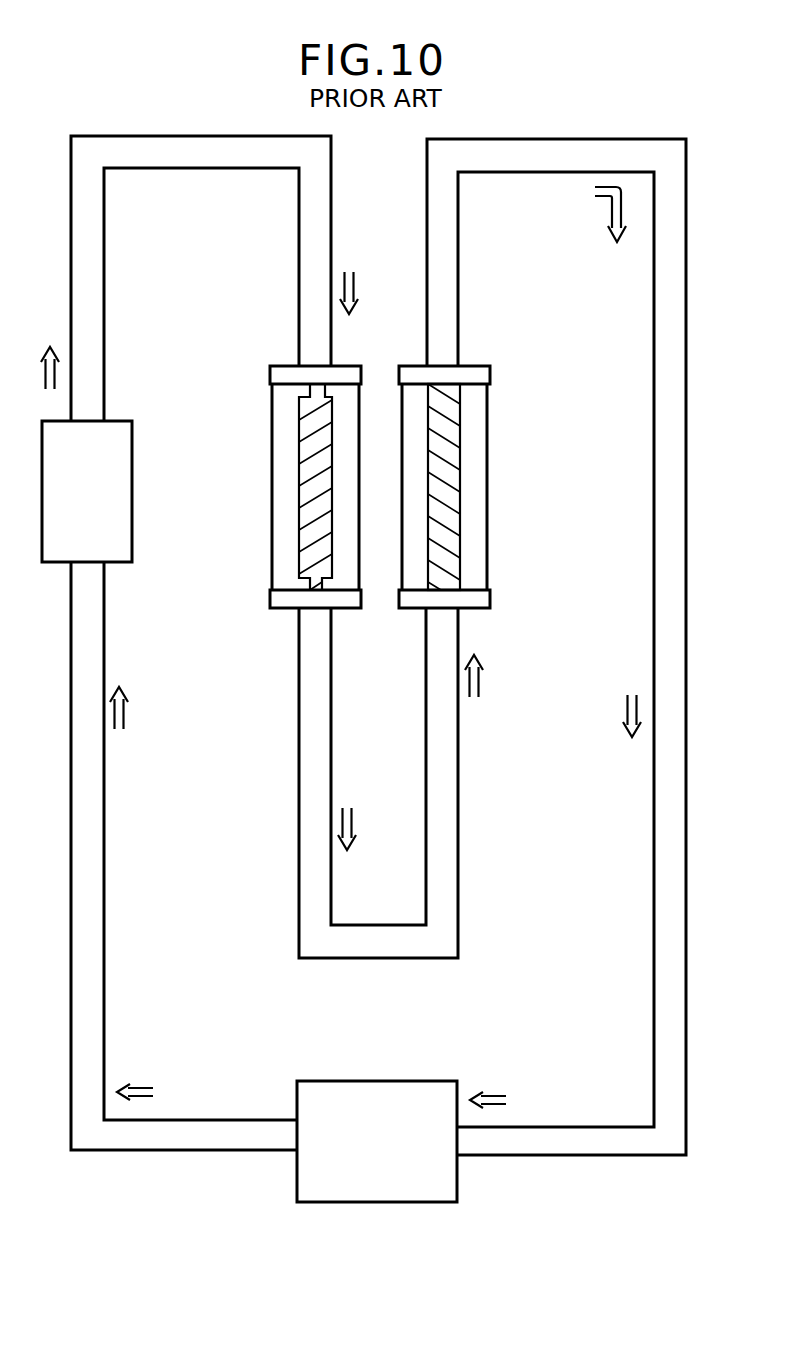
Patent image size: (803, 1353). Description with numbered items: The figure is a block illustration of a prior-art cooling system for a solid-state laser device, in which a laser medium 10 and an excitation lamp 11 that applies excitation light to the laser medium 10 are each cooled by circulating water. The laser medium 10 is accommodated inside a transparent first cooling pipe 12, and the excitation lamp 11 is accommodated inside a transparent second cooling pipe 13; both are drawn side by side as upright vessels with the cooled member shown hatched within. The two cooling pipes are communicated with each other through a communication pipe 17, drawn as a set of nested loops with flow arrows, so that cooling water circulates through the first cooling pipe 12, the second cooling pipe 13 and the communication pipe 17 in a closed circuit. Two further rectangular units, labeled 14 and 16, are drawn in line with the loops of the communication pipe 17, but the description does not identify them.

The laser medium 10 is at (305, 532).
The excitation lamp 11 is at (447, 485).
The first cooling pipe 12 is at (272, 480).
The second cooling pipe 13 is at (490, 417).
The heat exchanger / load 14 is at (131, 422).
The heat exchanger / pump unit 16 is at (298, 1081).
The communication pipe 17 is at (654, 572).